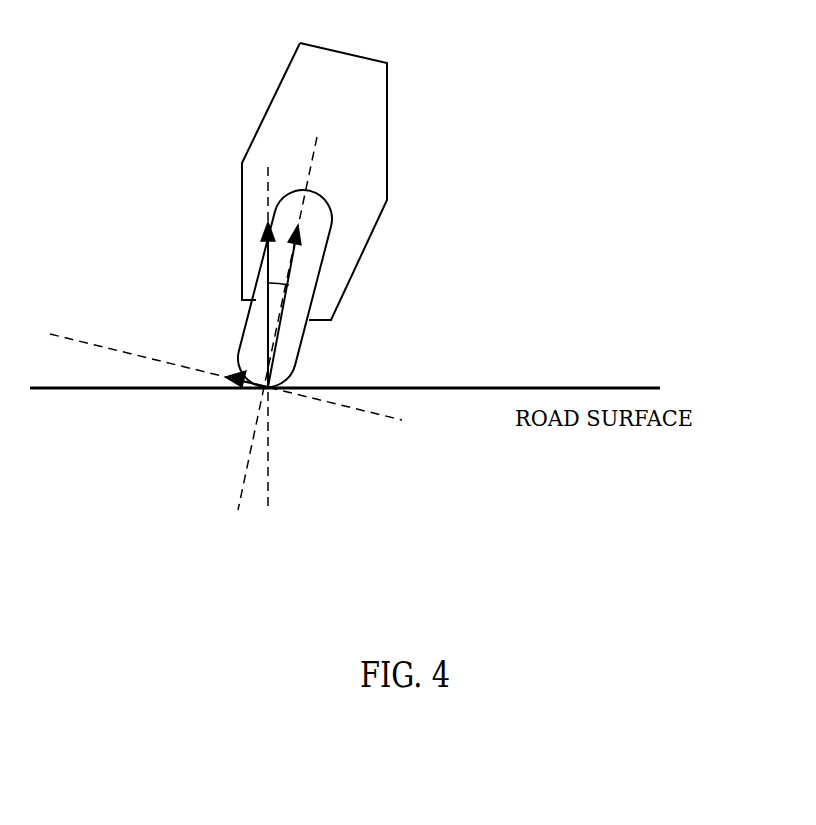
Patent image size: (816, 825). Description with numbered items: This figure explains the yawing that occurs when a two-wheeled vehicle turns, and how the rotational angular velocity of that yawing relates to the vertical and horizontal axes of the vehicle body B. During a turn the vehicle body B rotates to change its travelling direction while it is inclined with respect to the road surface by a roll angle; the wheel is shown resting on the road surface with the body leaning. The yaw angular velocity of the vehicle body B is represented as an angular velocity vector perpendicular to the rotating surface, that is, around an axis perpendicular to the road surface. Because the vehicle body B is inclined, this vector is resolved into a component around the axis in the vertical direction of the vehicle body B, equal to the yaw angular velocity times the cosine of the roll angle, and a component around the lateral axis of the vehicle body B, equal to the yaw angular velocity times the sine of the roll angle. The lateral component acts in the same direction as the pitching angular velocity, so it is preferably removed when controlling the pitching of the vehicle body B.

The vehicle body B is at (388, 87).